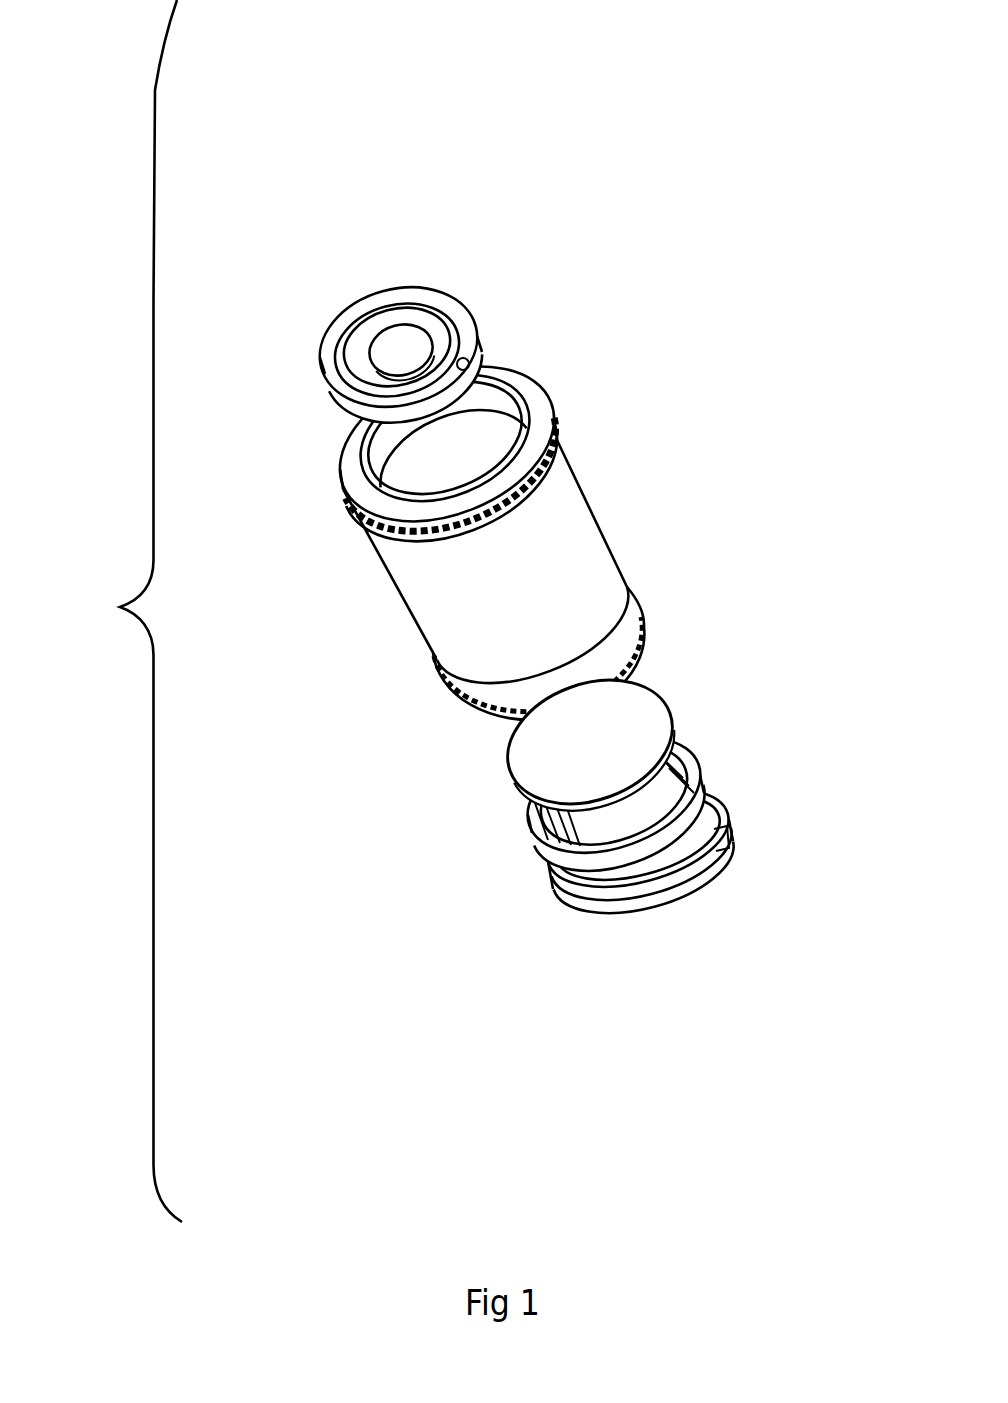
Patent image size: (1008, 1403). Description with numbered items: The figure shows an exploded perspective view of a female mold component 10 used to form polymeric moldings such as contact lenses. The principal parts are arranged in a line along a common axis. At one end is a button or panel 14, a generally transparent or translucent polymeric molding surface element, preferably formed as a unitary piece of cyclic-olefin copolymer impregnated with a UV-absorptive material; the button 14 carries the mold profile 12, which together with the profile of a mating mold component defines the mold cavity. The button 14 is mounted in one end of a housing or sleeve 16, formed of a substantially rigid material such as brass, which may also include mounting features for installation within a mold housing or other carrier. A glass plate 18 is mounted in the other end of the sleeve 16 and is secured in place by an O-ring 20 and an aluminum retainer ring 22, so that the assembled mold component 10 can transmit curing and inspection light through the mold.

The mold component 10 is at (107, 611).
The mold profile 12 is at (385, 313).
The button 14 is at (468, 361).
The housing or sleeve 16 is at (439, 608).
The glass plate 18 is at (537, 772).
The O-ring 20 is at (688, 746).
The retainer ring 22 is at (706, 867).